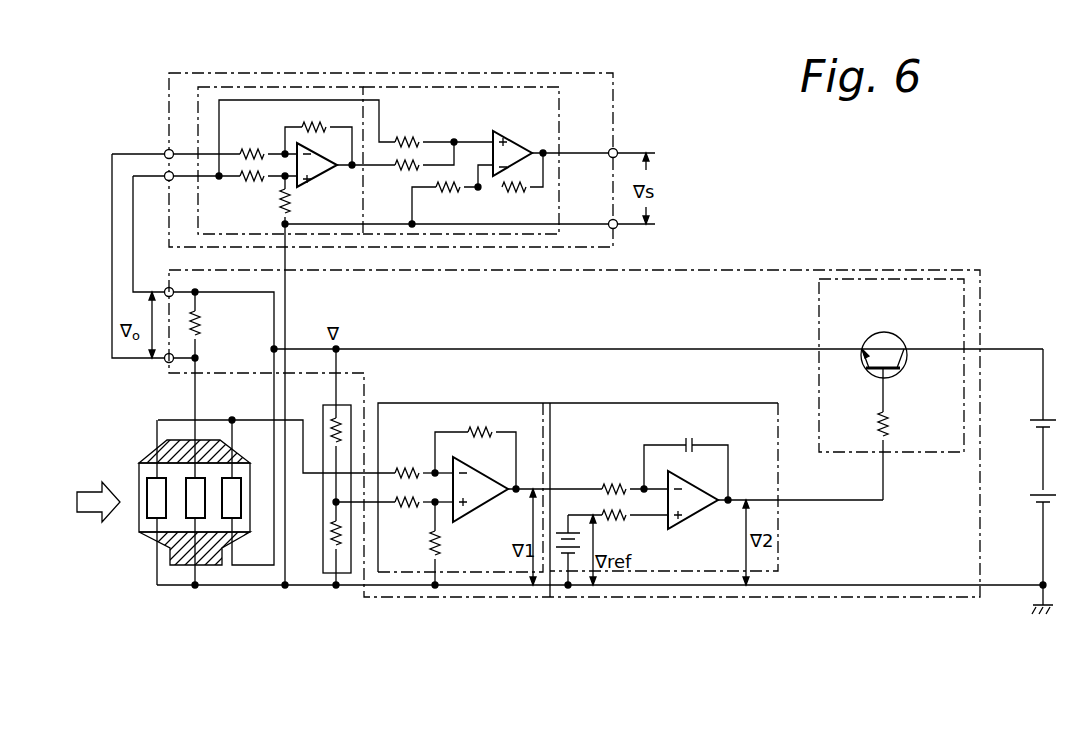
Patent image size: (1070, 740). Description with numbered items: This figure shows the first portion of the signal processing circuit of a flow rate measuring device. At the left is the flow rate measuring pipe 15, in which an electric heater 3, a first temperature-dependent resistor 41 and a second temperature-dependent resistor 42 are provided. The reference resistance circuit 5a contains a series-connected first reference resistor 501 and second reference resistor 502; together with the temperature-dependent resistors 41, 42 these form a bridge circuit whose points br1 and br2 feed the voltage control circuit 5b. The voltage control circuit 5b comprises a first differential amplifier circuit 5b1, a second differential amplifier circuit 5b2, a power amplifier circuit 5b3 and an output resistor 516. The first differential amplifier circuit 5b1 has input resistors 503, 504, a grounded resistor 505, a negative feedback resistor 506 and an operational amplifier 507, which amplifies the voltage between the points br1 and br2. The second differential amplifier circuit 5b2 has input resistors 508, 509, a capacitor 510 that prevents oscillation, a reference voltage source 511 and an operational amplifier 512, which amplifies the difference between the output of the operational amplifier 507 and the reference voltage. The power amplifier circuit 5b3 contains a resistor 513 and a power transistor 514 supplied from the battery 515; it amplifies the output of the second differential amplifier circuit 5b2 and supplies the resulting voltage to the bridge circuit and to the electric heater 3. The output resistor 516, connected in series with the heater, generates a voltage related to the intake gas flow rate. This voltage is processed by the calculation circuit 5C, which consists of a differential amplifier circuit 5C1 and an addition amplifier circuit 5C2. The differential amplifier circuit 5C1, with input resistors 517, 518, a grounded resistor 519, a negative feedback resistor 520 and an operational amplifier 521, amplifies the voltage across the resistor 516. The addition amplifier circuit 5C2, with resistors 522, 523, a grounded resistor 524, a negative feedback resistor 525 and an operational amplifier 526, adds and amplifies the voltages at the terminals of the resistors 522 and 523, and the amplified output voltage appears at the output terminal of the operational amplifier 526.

The calculation circuit 5C is at (476, 73).
The differential amplifier circuit 5C1 is at (235, 87).
The addition amplifier circuit 5C2 is at (582, 137).
The input resistor 517 is at (254, 149).
The input resistor 518 is at (249, 181).
The grounded resistor 519 is at (290, 206).
The negative feedback resistor 520 is at (316, 122).
The operational amplifier 521 is at (333, 181).
The resistor 522 is at (404, 172).
The resistor 523 is at (412, 138).
The grounded resistor 524 is at (444, 191).
The negative feedback resistor 525 is at (510, 191).
The operational amplifier 526 is at (520, 141).
The voltage control circuit 5b is at (632, 270).
The first differential amplifier circuit 5b1 is at (415, 403).
The second differential amplifier circuit 5b2 is at (780, 470).
The power amplifier circuit 5b3 is at (817, 336).
The output resistor 516 is at (200, 330).
The reference resistance circuit 5a is at (347, 582).
The first reference resistor 501 is at (328, 424).
The second reference resistor 502 is at (325, 540).
The input resistor 503 is at (401, 469).
The input resistor 504 is at (404, 510).
The grounded resistor 505 is at (441, 554).
The negative feedback resistor 506 is at (475, 458).
The operational amplifier 507 is at (489, 502).
The input resistor 508 is at (610, 478).
The input resistor 509 is at (621, 525).
The capacitor 510 is at (690, 438).
The reference voltage source 511 is at (560, 532).
The operational amplifier 512 is at (703, 518).
The resistor 513 is at (891, 424).
The power transistor 514 is at (904, 368).
The battery 515 is at (1037, 455).
The point of the bridge circuit br1 is at (333, 503).
The point of the bridge circuit br2 is at (232, 420).
The measuring pipe 15 is at (142, 538).
The electric heater 3 is at (182, 512).
The first temperature-dependent resistor 41 is at (240, 514).
The second temperature-dependent resistor 42 is at (147, 488).